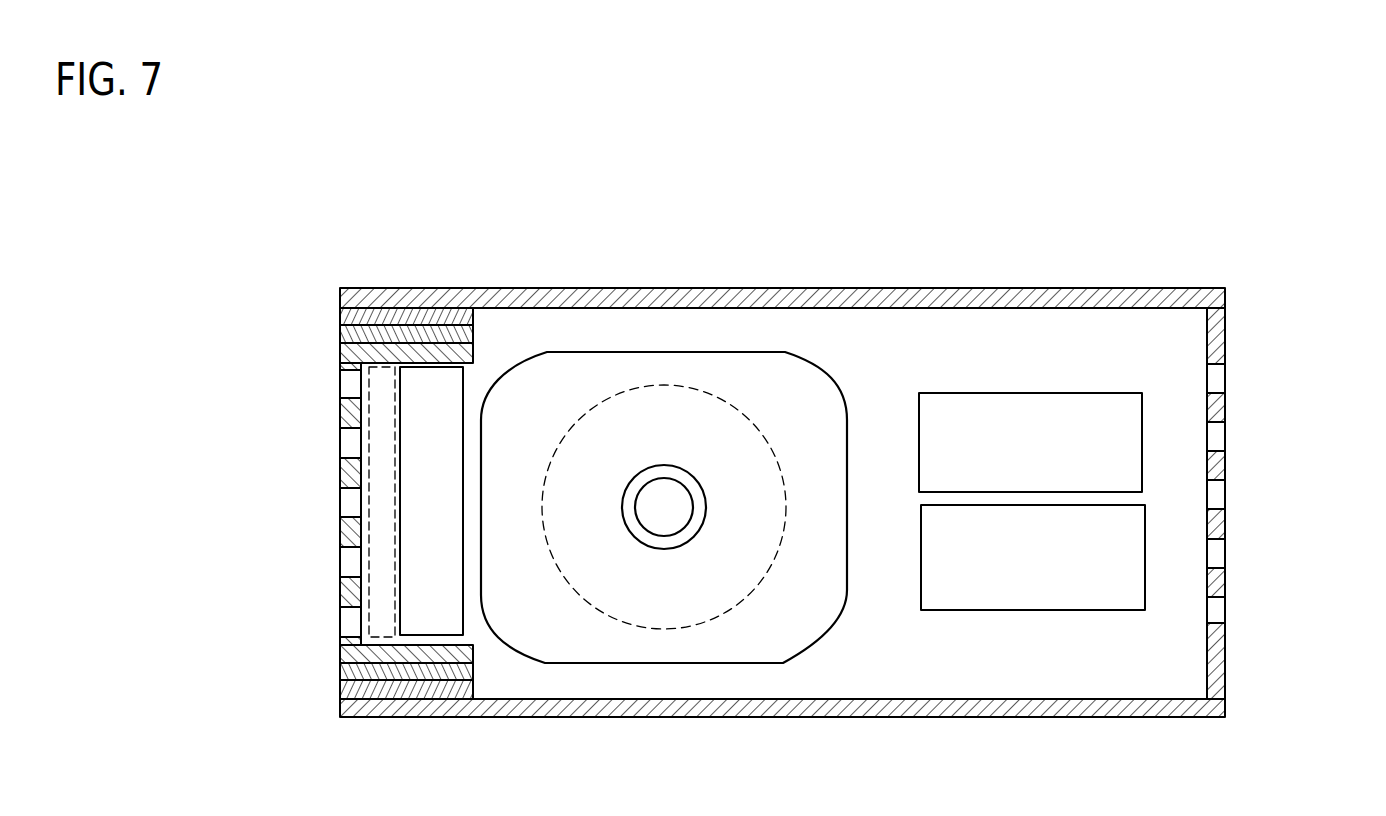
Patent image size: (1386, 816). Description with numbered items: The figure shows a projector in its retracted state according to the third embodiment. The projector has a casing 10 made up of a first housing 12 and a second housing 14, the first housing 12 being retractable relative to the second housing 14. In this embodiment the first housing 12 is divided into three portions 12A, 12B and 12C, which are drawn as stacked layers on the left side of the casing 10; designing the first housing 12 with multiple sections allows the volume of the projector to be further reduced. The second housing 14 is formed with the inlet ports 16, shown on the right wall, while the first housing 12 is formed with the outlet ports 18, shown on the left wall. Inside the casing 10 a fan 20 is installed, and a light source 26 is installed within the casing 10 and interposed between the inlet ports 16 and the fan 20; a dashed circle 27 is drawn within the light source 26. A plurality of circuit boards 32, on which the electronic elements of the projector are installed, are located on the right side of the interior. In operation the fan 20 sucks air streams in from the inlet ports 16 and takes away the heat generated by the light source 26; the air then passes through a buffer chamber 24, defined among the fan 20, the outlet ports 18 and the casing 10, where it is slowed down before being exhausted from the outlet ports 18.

The casing 10 is at (142, 248).
The first housing 12 is at (198, 293).
The first portion of the first housing 12A is at (338, 316).
The second portion of the first housing 12B is at (338, 333).
The third portion of the first housing 12C is at (338, 353).
The second housing 14 is at (338, 298).
The inlet ports 16 is at (1218, 380).
The outlet ports 18 is at (346, 445).
The fan 20 is at (425, 408).
The buffer chamber 24 is at (370, 508).
The light source 26 is at (635, 352).
The disk (hidden) 27 is at (700, 392).
The circuit boards 32 is at (1018, 520).